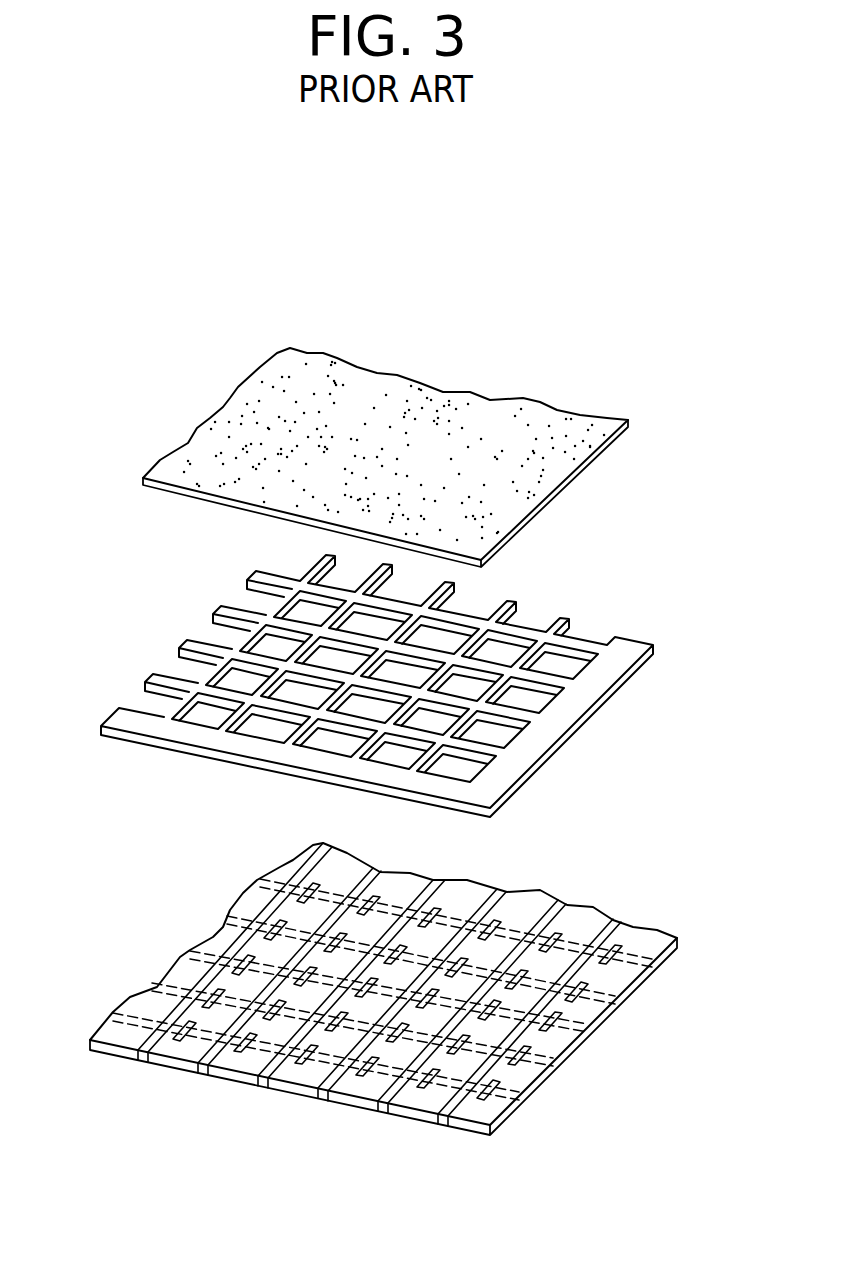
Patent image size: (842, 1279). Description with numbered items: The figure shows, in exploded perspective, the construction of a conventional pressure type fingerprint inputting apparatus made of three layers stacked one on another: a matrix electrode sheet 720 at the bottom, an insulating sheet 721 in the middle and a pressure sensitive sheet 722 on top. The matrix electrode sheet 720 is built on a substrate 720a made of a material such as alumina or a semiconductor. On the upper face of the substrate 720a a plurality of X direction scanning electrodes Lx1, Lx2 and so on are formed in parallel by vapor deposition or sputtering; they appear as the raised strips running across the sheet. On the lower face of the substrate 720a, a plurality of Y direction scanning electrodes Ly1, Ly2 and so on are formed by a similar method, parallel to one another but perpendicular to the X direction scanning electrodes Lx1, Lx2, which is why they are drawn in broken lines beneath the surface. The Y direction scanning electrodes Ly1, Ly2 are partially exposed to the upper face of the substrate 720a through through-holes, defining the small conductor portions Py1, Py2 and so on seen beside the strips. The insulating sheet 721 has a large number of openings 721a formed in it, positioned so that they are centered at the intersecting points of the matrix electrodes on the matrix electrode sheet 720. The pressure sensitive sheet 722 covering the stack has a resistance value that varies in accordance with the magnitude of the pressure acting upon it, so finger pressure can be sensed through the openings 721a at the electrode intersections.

The pressure sensitive sheet 722 is at (222, 416).
The insulating sheet 721 is at (409, 682).
The openings 721a is at (493, 740).
The matrix electrode sheet 720 is at (384, 1011).
The substrate 720a is at (632, 933).
The X direction scanning electrode Lx1 is at (120, 1057).
The X direction scanning electrode Lx2 is at (220, 1045).
The Y direction scanning electrode Ly1 is at (517, 1097).
The Y direction scanning electrode Ly2 is at (552, 1067).
The conductor portion Py1 is at (180, 1036).
The conductor portion Py2 is at (214, 992).